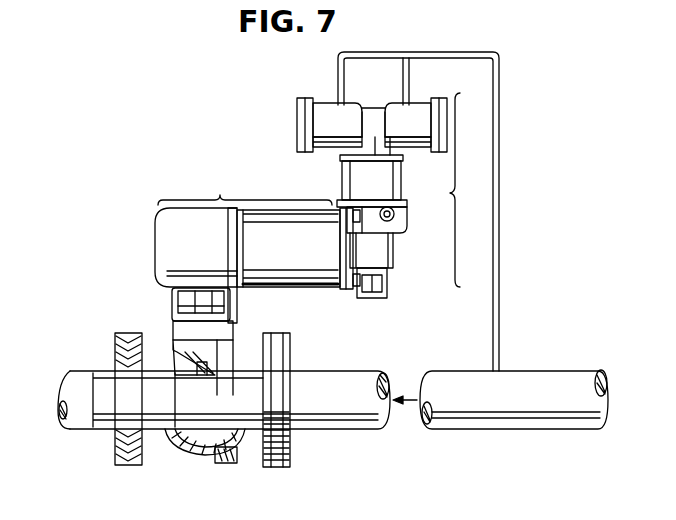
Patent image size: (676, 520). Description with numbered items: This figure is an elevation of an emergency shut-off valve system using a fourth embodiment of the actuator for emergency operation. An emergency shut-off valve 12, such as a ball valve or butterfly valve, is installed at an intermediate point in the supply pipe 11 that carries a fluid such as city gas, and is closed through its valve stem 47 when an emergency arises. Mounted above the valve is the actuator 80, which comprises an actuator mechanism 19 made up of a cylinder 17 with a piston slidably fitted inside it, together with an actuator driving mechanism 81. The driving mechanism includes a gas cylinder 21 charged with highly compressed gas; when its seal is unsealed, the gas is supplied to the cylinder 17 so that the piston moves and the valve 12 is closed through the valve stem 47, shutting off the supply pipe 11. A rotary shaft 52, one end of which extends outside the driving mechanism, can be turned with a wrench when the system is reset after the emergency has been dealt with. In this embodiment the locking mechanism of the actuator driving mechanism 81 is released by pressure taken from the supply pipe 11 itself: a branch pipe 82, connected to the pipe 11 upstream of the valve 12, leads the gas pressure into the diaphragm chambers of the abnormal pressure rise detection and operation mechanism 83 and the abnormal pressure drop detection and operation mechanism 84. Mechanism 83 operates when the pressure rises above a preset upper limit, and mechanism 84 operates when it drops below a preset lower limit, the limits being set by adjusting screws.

The supply pipe 11 is at (360, 421).
The emergency shut-off valve 12 is at (210, 450).
The cylinder 17 is at (284, 289).
The actuator mechanism 19 is at (257, 244).
The gas cylinder 21 is at (386, 282).
The valve stem 47 is at (198, 298).
The rotary shaft 52 is at (395, 213).
The actuator 80 is at (284, 198).
The actuator driving mechanism 81 is at (469, 190).
The branch pipe 82 is at (499, 150).
The abnormal pressure rise detection and operation mechanism 83 is at (412, 140).
The abnormal pressure drop detection and operation mechanism 84 is at (330, 138).